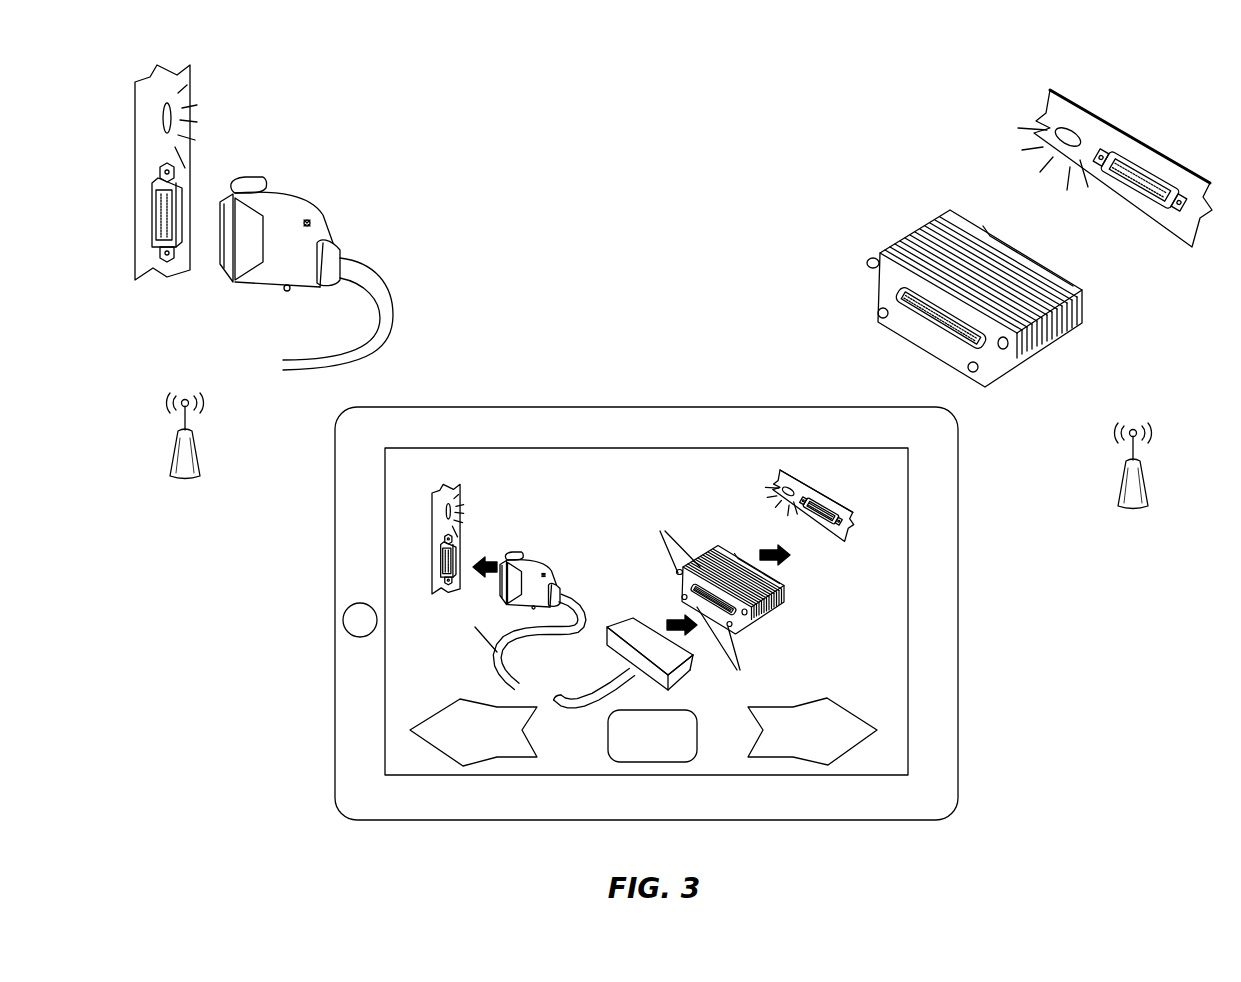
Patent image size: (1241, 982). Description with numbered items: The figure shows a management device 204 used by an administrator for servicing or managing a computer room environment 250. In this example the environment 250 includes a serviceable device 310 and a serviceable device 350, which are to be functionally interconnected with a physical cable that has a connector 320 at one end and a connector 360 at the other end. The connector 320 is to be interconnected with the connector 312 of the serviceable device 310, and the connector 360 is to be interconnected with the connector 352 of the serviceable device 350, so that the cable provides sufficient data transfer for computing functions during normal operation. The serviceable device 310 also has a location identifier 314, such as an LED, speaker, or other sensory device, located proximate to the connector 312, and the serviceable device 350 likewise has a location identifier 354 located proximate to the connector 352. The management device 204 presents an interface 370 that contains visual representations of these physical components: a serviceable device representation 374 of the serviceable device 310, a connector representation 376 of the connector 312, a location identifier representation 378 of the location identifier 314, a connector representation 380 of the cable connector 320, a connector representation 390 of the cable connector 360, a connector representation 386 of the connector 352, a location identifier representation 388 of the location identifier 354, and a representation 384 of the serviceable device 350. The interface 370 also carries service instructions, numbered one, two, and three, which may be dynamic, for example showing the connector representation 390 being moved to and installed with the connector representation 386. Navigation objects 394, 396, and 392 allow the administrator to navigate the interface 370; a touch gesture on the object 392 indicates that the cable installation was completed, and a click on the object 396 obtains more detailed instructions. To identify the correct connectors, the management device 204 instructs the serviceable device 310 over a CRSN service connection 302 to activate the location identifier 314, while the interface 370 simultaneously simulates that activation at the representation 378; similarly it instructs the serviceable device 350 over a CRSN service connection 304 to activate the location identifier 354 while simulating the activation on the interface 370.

The management device 204 is at (335, 525).
The computer room environment 250 is at (588, 131).
The CRSN service connection 302 is at (172, 452).
The CRSN service connection 304 is at (1122, 482).
The serviceable device 310 is at (232, 93).
The connector 312 is at (160, 210).
The location identifier 314 is at (160, 118).
The connector 320 is at (340, 190).
The serviceable device 350 is at (970, 98).
The connector 352 is at (1140, 162).
The location identifier 354 is at (1075, 133).
The connector 360 is at (883, 222).
The interface 370 is at (539, 481).
The serviceable device representation 374 is at (427, 563).
The connector representation 376 is at (445, 567).
The location identifier representation 378 is at (445, 508).
The connector representation 380 is at (535, 552).
The serviceable device representation 384 is at (835, 488).
The connector representation 386 is at (817, 530).
The location identifier representation 388 is at (775, 483).
The connector representation 390 is at (778, 598).
The navigation object 392 is at (855, 722).
The navigation object 394 is at (450, 712).
The navigation object 396 is at (615, 722).